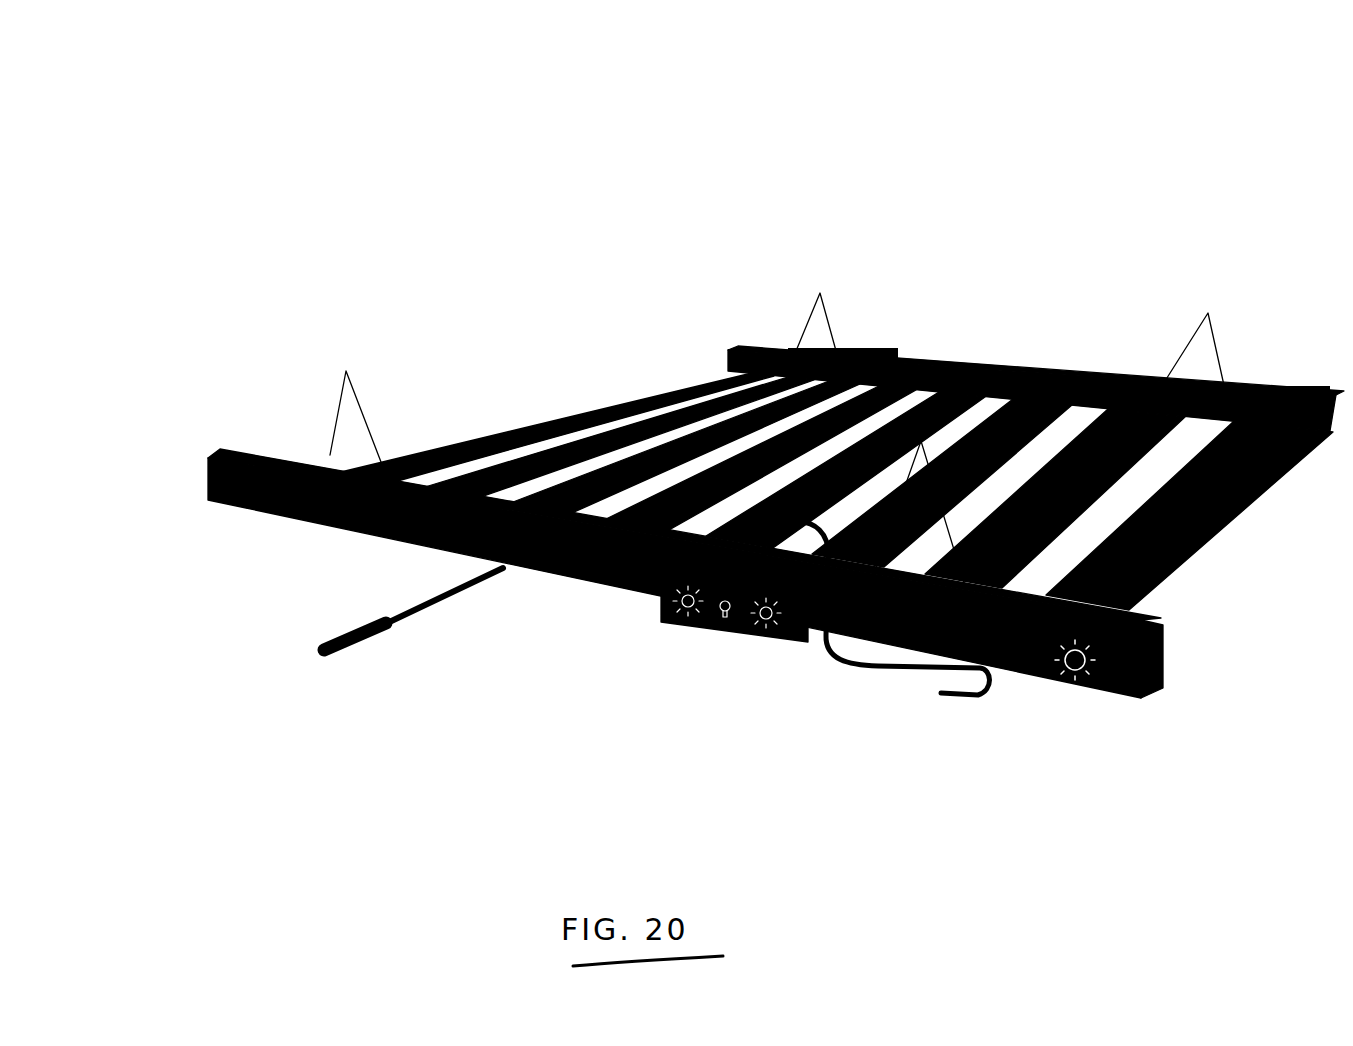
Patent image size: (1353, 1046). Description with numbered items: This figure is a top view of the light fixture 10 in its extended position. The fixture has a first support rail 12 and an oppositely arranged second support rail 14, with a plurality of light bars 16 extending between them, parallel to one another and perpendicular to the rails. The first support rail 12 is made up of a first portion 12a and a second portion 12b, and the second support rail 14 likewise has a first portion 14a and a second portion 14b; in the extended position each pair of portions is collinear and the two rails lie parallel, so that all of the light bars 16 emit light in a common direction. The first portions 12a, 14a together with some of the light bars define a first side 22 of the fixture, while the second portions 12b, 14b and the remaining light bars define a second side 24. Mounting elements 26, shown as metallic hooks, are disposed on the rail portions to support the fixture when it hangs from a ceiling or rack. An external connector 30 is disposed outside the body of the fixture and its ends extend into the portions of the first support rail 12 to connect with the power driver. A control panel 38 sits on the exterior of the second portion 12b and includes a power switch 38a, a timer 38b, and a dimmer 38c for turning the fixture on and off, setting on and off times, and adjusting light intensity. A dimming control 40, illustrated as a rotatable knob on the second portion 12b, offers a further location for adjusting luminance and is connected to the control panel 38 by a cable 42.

The light fixture 10 is at (270, 114).
The first support rail 12 is at (706, 564).
The first portion of first support rail 12a is at (1155, 630).
The second portion of first support rail 12b is at (252, 503).
The second support rail 14 is at (984, 357).
The first portion of second support rail 14a is at (1272, 384).
The second portion of second support rail 14b is at (883, 347).
The light bar 16 is at (1190, 484).
The first side 22 is at (1238, 492).
The second side 24 is at (531, 396).
The mounting element 26 is at (1200, 305).
The external connector 30 is at (496, 584).
The control panel 38 is at (723, 684).
The power switch 38a is at (715, 626).
The timer 38b is at (665, 608).
The dimmer 38c is at (765, 622).
The dimming control 40 is at (1072, 680).
The cable 42 is at (935, 684).